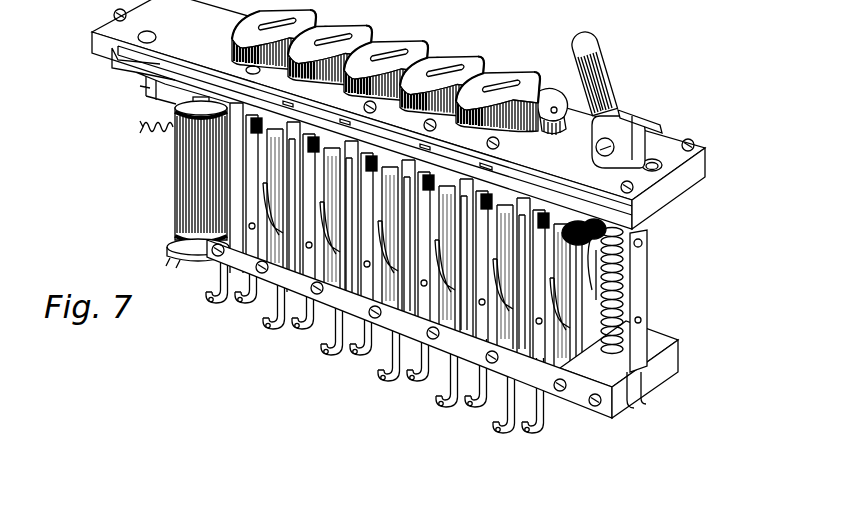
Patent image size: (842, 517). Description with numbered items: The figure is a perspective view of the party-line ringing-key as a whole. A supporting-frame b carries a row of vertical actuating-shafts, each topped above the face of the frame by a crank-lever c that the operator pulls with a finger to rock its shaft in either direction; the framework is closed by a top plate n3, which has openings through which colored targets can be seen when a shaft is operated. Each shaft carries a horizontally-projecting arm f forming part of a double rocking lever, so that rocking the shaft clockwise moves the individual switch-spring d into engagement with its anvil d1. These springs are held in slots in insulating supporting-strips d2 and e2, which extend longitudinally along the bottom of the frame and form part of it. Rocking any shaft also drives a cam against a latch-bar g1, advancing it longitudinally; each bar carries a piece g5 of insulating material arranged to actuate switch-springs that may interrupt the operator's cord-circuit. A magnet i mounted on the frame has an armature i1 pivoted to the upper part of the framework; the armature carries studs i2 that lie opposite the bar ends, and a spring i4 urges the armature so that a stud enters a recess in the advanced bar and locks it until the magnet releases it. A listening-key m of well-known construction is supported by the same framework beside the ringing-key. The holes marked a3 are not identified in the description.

The top plate n3 is at (398, 114).
The crank-lever c is at (517, 72).
The cam pivot holes a3 is at (431, 113).
The horizontally-projecting arm f is at (258, 118).
The supporting-frame b is at (100, 53).
The latch-bar g1 is at (498, 165).
The piece of insulating material g5 is at (545, 211).
The listening-key m is at (660, 127).
The magnet i is at (510, 347).
The armature i1 is at (567, 423).
The stud i2 is at (145, 78).
The spring i4 is at (173, 133).
The switch-spring d is at (452, 337).
The anvil d1 is at (368, 347).
The insulating supporting-strip d2 is at (620, 403).
The insulating supporting-strip e2 is at (665, 367).